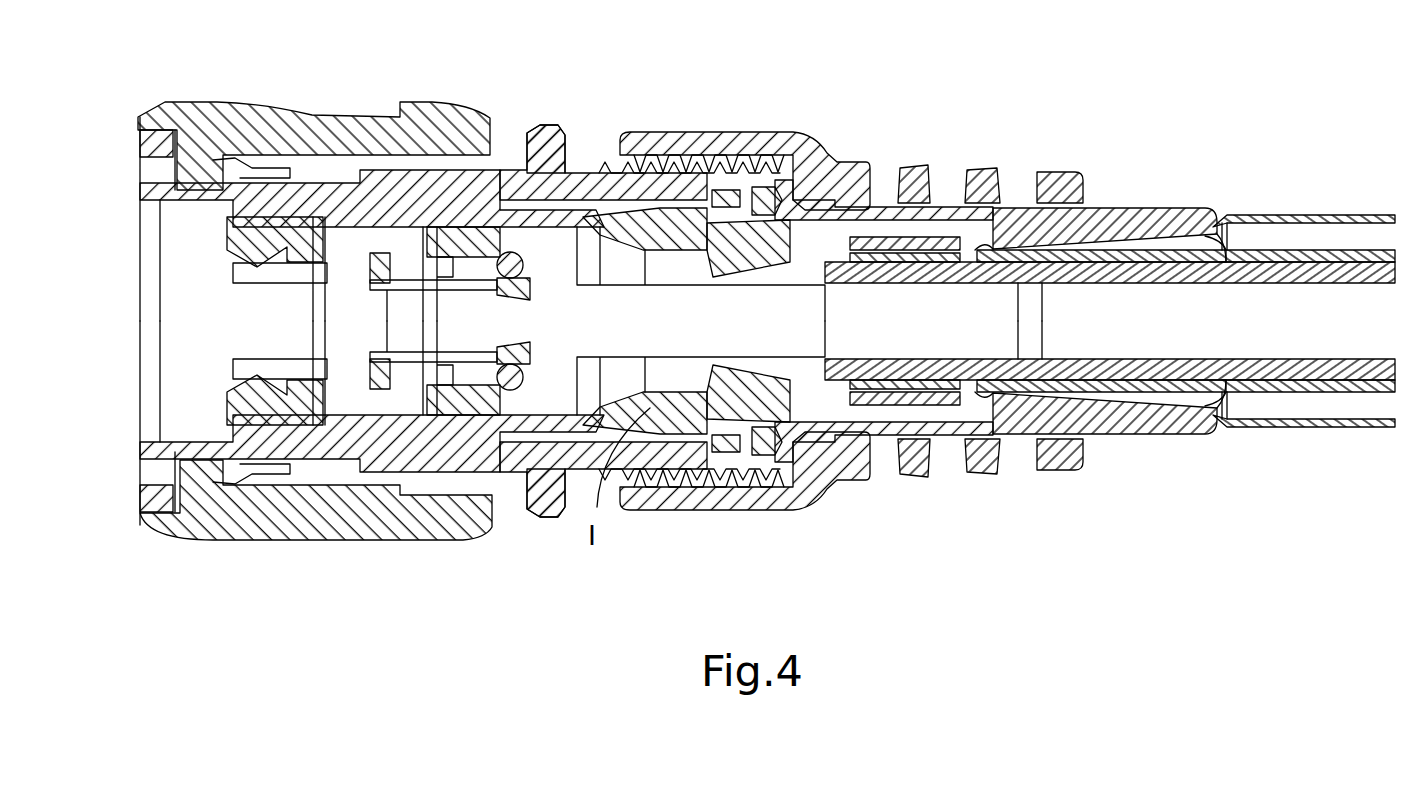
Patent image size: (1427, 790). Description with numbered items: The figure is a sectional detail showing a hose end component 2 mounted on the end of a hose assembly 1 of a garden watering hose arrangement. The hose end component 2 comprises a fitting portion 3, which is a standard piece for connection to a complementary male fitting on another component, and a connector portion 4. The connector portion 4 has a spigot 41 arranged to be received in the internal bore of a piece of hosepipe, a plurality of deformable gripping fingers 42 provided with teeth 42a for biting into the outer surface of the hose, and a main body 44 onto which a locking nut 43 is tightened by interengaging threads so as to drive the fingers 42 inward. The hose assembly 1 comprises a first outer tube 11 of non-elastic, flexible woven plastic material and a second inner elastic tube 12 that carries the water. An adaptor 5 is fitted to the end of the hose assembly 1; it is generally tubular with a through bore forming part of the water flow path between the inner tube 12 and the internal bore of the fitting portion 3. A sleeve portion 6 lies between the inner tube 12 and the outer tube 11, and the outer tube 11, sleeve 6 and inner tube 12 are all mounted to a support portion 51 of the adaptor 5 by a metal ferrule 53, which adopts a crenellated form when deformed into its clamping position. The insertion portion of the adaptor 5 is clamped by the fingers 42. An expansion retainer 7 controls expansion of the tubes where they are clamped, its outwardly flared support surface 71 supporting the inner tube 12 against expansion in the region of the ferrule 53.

The hose assembly 1 is at (1190, 153).
The hose end component 2 is at (463, 101).
The fitting portion 3 is at (400, 102).
The connector portion 4 is at (697, 517).
The spigot 41 is at (713, 267).
The deformable gripping fingers 42 is at (765, 197).
The teeth 42a is at (777, 192).
The locking nut 43 is at (803, 478).
The main body 44 is at (548, 497).
The adaptor 5 is at (673, 237).
The support portion 51 is at (947, 275).
The metal ferrule 53 is at (897, 240).
The sleeve portion 6 is at (1310, 385).
The expansion retainer 7 is at (1150, 430).
The support surface 71 is at (1195, 392).
The first outer tube 11 is at (1310, 217).
The second inner elastic tube 12 is at (1292, 273).